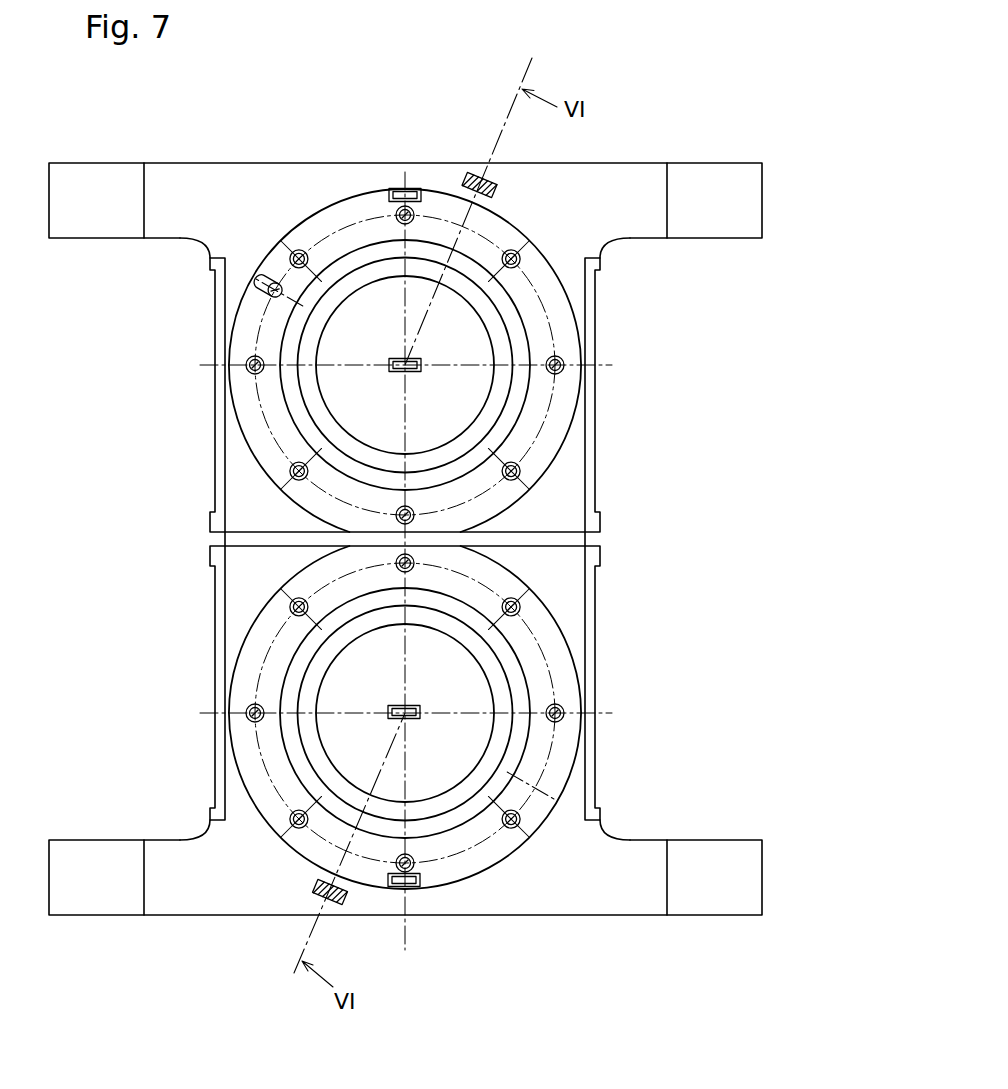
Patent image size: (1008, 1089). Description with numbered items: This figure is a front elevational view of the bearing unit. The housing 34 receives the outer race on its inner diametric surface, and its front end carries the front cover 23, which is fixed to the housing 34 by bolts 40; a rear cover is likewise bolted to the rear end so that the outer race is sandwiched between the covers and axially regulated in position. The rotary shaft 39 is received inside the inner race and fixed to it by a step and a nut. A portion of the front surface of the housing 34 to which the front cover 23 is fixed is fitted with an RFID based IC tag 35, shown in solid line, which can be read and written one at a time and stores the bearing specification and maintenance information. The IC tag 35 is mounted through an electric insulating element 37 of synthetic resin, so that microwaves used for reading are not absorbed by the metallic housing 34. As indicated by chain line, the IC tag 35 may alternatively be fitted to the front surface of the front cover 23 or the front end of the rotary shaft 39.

The front cover 23 is at (560, 413).
The housing 34 is at (593, 192).
The IC tag 35 is at (392, 189).
The electric insulating element 37 is at (465, 178).
The rotary shaft 39 is at (447, 403).
The bolts 40 is at (299, 250).